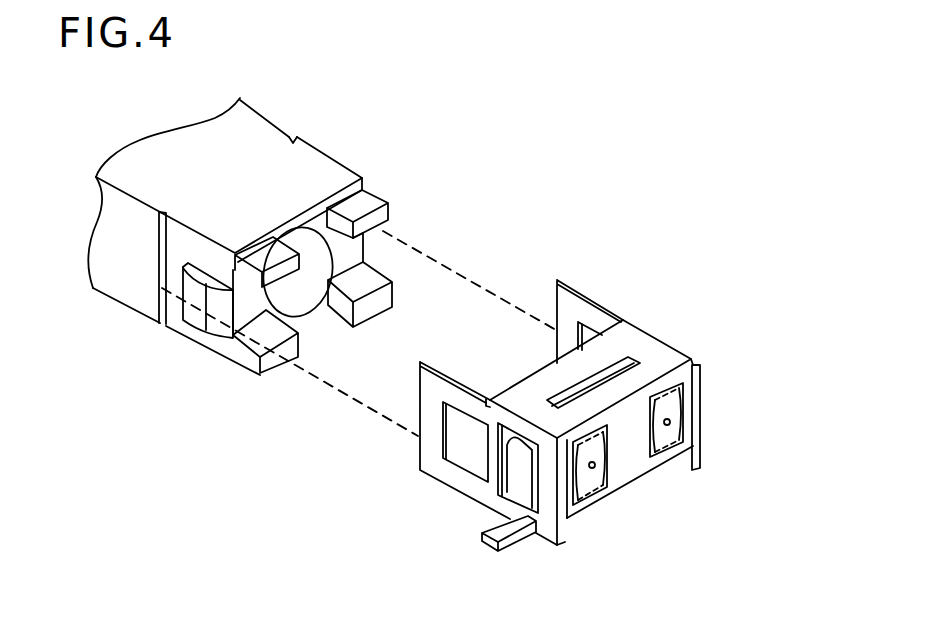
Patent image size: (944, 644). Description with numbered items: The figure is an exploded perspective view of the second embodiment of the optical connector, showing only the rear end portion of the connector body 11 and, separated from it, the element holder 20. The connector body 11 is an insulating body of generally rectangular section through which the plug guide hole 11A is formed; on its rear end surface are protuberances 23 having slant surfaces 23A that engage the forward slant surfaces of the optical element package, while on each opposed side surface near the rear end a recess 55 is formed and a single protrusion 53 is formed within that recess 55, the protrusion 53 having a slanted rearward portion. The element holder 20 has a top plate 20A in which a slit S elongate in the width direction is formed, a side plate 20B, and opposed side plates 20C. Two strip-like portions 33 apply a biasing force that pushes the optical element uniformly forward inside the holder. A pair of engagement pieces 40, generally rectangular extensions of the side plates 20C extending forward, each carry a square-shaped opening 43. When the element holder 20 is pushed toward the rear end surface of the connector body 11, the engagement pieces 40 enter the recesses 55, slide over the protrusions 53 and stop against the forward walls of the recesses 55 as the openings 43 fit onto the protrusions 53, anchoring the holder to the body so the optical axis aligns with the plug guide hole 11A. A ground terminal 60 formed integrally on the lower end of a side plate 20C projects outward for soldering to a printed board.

The connector body 11 is at (310, 170).
The plug guide hole 11A is at (306, 261).
The protuberances 23 is at (370, 196).
The slant surfaces 23A is at (377, 270).
The protrusion 53 is at (186, 298).
The recess 55 is at (300, 138).
The element holder 20 is at (716, 377).
The top plate 20A is at (667, 350).
The side plate 20B is at (686, 402).
The side plates 20C is at (566, 528).
The strip-like portions 33 is at (664, 440).
The engagement pieces 40 is at (432, 391).
The opening 43 is at (467, 445).
The ground terminal 60 is at (478, 532).
The slit S is at (623, 362).